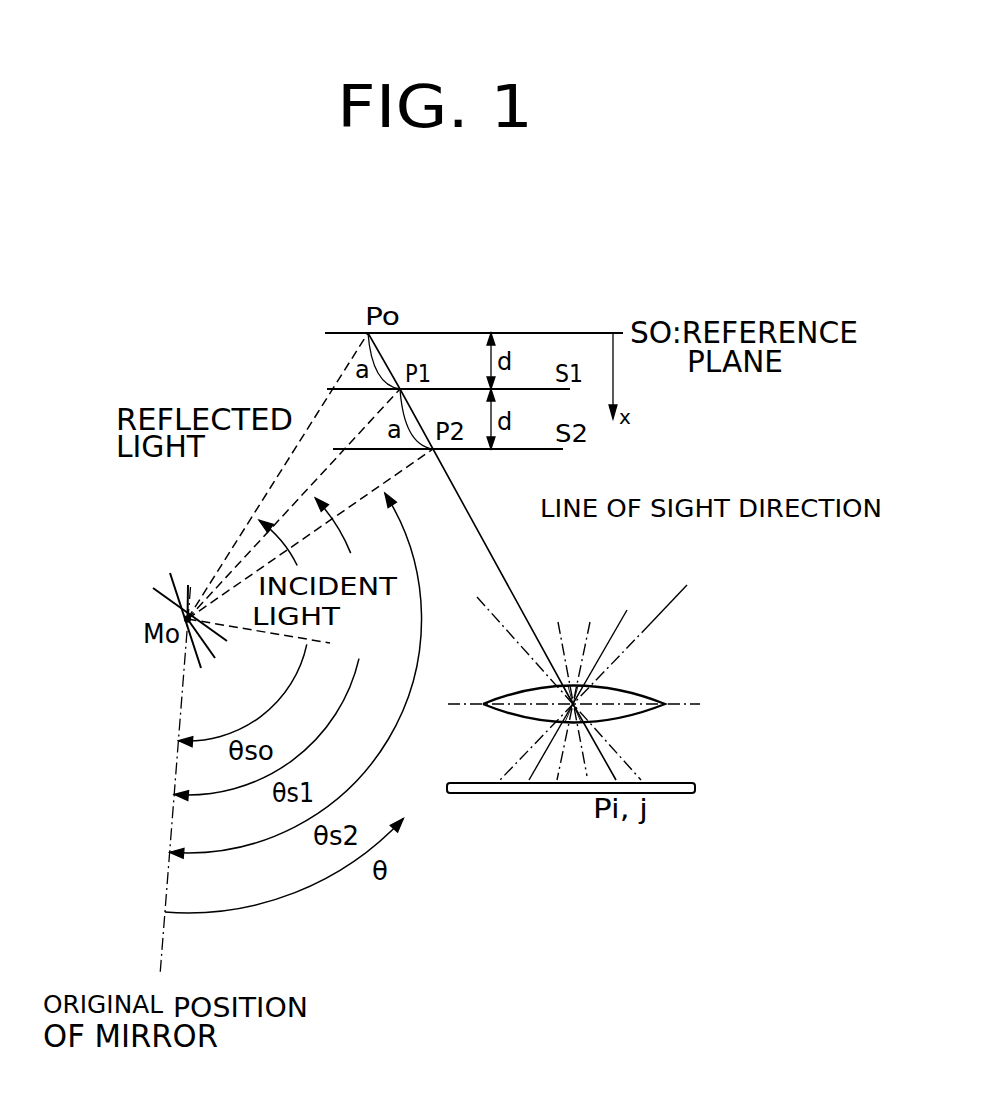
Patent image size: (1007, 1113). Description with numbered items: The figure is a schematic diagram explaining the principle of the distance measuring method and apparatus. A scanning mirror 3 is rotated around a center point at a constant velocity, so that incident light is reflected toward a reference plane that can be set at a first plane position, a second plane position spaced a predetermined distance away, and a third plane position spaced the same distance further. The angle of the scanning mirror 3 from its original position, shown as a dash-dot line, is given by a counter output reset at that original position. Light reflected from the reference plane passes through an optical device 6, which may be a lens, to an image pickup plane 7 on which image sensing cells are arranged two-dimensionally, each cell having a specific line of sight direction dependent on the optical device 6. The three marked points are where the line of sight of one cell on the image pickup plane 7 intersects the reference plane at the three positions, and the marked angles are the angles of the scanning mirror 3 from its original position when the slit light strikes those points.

The scanning mirror 3 is at (188, 619).
The optical device 6 is at (643, 693).
The image pickup plane 7 is at (678, 793).